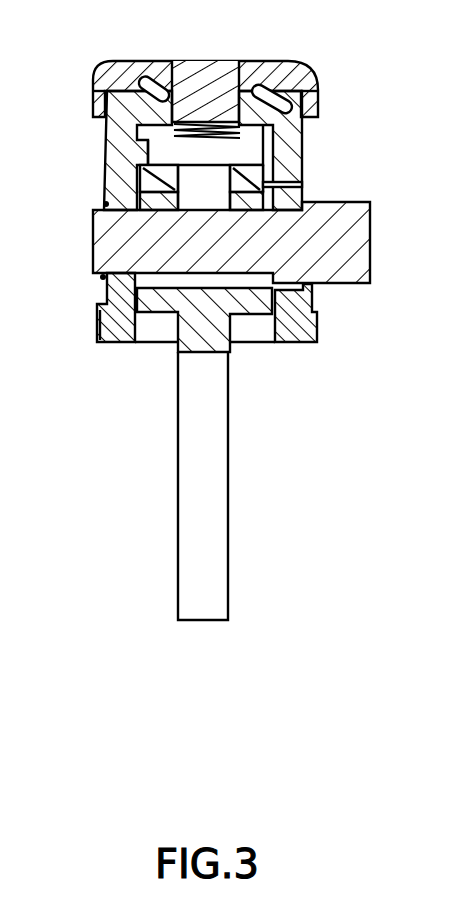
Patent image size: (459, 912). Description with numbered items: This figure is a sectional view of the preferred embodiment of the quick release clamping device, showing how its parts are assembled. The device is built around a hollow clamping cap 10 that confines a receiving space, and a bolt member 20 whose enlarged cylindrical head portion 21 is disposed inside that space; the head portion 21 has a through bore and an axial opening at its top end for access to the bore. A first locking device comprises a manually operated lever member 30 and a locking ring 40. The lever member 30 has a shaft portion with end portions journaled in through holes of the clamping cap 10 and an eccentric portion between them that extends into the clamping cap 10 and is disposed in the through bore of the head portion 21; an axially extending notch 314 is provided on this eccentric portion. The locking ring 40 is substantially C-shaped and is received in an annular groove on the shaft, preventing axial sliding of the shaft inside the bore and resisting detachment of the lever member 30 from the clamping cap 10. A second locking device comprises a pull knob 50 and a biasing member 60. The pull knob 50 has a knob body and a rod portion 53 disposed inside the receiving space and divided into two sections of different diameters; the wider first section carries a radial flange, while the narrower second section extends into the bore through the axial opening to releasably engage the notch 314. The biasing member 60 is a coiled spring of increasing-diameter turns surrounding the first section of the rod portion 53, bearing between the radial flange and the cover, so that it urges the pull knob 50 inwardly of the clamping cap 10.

The hollow clamping cap 10 is at (118, 161).
The bolt member 20 is at (230, 390).
The enlarged cylindrical head portion 21 is at (156, 296).
The manually operated lever member 30 is at (352, 246).
The locking ring 40 is at (100, 283).
The pull knob 50 is at (290, 62).
The rod portion 53 is at (190, 72).
The biasing member 60 is at (258, 130).
The axially extending notch 314 is at (302, 183).